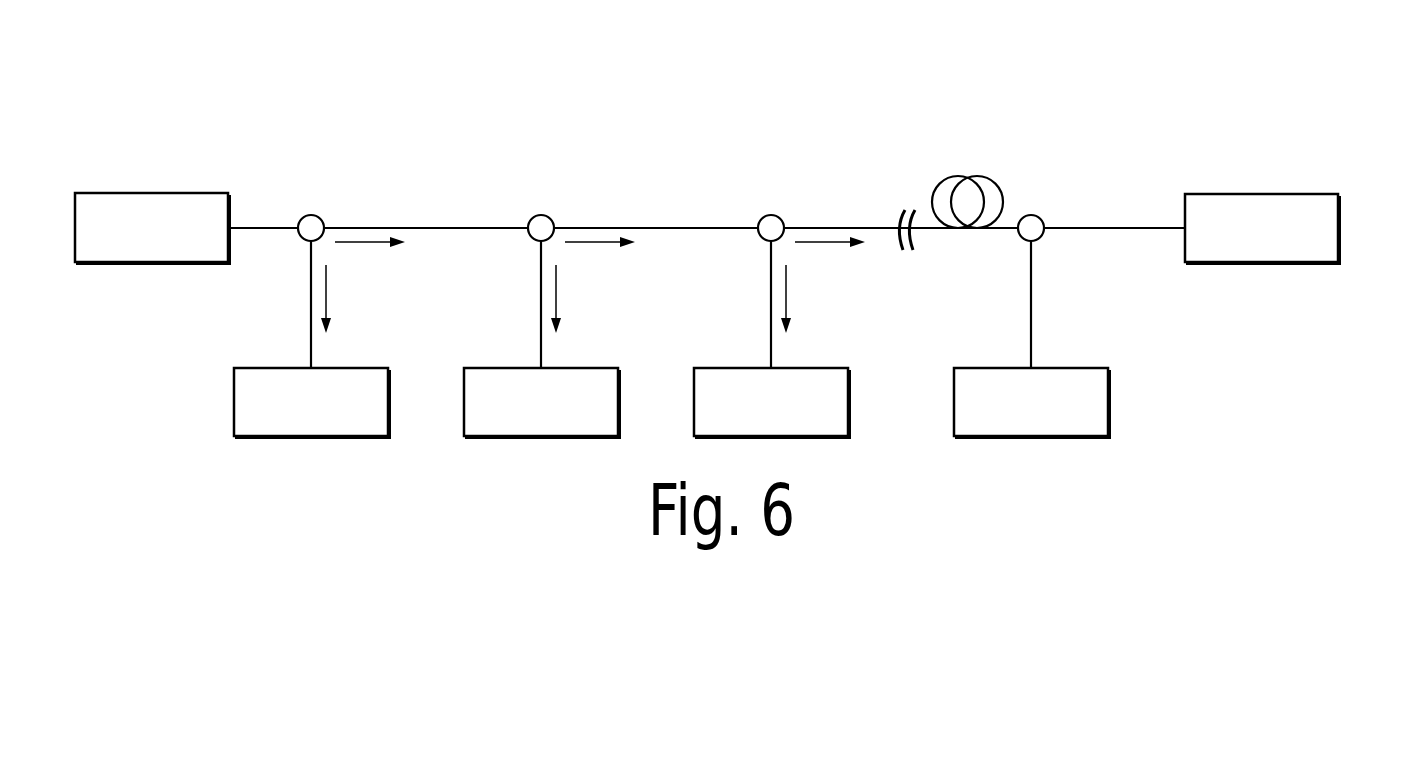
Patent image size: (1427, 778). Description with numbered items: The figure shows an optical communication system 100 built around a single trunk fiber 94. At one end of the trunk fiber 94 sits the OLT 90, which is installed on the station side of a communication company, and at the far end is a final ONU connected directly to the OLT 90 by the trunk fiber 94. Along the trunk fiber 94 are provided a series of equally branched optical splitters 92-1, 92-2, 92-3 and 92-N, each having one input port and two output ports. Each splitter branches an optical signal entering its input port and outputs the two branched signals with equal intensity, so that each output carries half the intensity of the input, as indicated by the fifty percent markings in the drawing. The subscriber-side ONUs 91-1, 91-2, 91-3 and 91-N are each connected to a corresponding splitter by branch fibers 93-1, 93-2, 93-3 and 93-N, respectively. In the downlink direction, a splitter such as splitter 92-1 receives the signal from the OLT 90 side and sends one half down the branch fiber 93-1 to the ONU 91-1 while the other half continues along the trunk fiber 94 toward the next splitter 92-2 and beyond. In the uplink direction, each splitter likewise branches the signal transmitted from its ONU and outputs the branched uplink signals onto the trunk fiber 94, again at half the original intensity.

The optical communication system 100 is at (908, 94).
The OLT 90 is at (172, 193).
The ONU 91-1 is at (330, 368).
The ONU 91-2 is at (560, 368).
The ONU 91-3 is at (790, 368).
The ONU 91-N is at (1050, 368).
The equally branched optical splitter 92-1 is at (320, 219).
The equally branched optical splitter 92-2 is at (550, 219).
The equally branched optical splitter 92-3 is at (780, 219).
The equally branched optical splitter 92-N is at (1040, 219).
The branch fiber 93-1 is at (311, 309).
The branch fiber 93-2 is at (541, 309).
The branch fiber 93-3 is at (771, 309).
The branch fiber 93-N is at (1031, 309).
The trunk fiber 94 is at (875, 228).